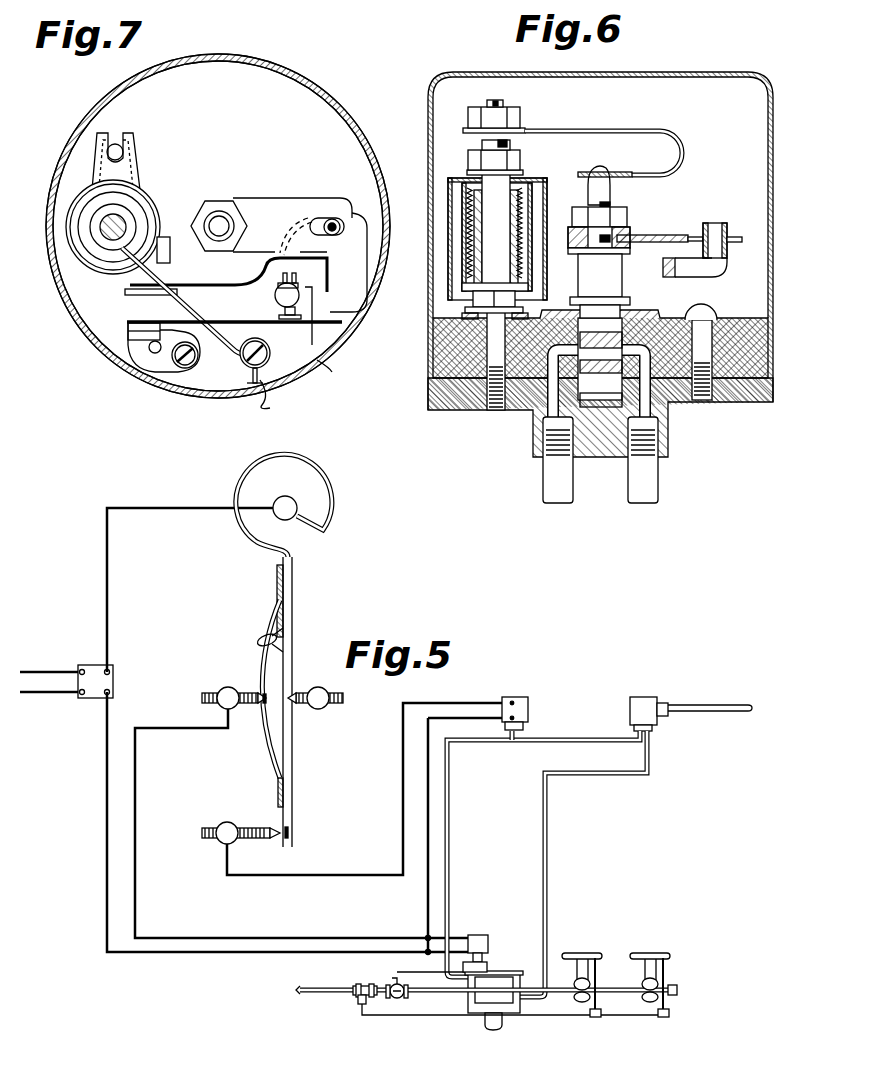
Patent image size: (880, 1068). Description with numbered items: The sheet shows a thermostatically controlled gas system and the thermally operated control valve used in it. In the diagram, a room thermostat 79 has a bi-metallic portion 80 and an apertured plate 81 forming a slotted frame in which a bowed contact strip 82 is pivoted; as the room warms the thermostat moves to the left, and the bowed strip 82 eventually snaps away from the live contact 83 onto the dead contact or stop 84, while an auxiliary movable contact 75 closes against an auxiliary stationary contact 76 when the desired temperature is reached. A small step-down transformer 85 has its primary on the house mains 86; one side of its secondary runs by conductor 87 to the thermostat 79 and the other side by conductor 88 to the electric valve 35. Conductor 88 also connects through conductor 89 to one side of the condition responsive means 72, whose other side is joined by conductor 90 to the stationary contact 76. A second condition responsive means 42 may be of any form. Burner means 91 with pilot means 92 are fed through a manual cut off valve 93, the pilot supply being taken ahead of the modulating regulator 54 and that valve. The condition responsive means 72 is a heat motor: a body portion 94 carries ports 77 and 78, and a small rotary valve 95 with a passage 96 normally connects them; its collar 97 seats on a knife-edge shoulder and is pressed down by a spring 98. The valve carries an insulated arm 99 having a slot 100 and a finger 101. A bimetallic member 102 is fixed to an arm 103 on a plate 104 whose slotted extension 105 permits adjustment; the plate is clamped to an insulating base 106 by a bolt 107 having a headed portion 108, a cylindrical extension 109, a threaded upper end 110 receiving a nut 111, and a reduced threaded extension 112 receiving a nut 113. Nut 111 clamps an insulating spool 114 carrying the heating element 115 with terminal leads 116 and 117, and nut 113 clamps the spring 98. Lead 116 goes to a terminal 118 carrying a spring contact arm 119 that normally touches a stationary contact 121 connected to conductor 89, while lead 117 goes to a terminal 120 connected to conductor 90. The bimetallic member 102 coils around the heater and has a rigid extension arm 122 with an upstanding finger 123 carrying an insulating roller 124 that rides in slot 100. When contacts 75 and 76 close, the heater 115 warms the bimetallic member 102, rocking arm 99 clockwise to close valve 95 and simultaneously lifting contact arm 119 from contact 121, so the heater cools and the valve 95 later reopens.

In FIG. 5, the electric valve 35 is at (505, 925).
In FIG. 5, the condition responsive means 42 is at (641, 695).
In FIG. 5, the pressure regulator 54 is at (496, 985).
In FIG. 7, the condition responsive means 72 is at (293, 66).
In FIG. 6, the condition responsive means 72 is at (713, 68).
In FIG. 5, the condition responsive means 72 is at (529, 701).
In FIG. 5, the auxiliary movable contact 75 is at (283, 838).
In FIG. 5, the auxiliary stationary contact 76 is at (255, 825).
In FIG. 6, the port 77 is at (647, 408).
In FIG. 6, the port 78 is at (557, 403).
In FIG. 5, the thermostat 79 is at (300, 567).
In FIG. 5, the bi-metallic portion 80 is at (336, 512).
In FIG. 5, the apertured plate or extension 81 is at (278, 790).
In FIG. 5, the bowed contact strip 82 is at (264, 736).
In FIG. 5, the live contact 83 is at (248, 684).
In FIG. 5, the dead contact or stop 84 is at (300, 705).
In FIG. 5, the step-down transformer 85 is at (90, 700).
In FIG. 5, the house mains 86 is at (41, 670).
In FIG. 5, the conductor 87 is at (107, 600).
In FIG. 5, the conductor 88 is at (107, 880).
In FIG. 7, the conductor 89 is at (334, 376).
In FIG. 5, the conductor 89 is at (427, 898).
In FIG. 7, the conductor 90 is at (274, 402).
In FIG. 5, the conductor 90 is at (286, 876).
In FIG. 5, the burner means 91 is at (580, 953).
In FIG. 5, the pilot means 92 is at (598, 965).
In FIG. 5, the manual cut off valve 93 is at (400, 1000).
In FIG. 6, the body portion 94 is at (733, 403).
In FIG. 6, the rotary valve 95 is at (610, 383).
In FIG. 6, the passage 96 is at (600, 350).
In FIG. 6, the collar 97 is at (617, 296).
In FIG. 6, the spring 98 is at (687, 153).
In FIG. 7, the arm 99 is at (272, 200).
In FIG. 6, the arm 99 is at (660, 232).
In FIG. 7, the slot 100 is at (348, 203).
In FIG. 7, the extension or finger 101 is at (338, 313).
In FIG. 7, the bimetallic member 102 is at (147, 192).
In FIG. 6, the bimetallic member 102 is at (447, 238).
In FIG. 7, the arm 103 is at (174, 222).
In FIG. 6, the plate 104 is at (460, 311).
In FIG. 7, the slotted extension 105 is at (137, 147).
In FIG. 6, the insulating base 106 is at (443, 343).
In FIG. 6, the bolt 107 is at (500, 411).
In FIG. 6, the headed portion 108 is at (515, 300).
In FIG. 6, the cylindrical extension 109 is at (500, 223).
In FIG. 6, the threaded upper end 110 is at (512, 145).
In FIG. 6, the nut 111 is at (467, 160).
In FIG. 6, the reduced threaded extension 112 is at (502, 103).
In FIG. 6, the nut 113 is at (522, 119).
In FIG. 6, the insulating spool 114 is at (463, 287).
In FIG. 6, the heating element 115 is at (466, 208).
In FIG. 7, the terminal lead 116 is at (147, 307).
In FIG. 7, the terminal lead 117 is at (190, 305).
In FIG. 7, the terminal 118 is at (163, 362).
In FIG. 7, the spring contact arm 119 is at (272, 325).
In FIG. 7, the terminal 120 is at (243, 360).
In FIG. 7, the stationary contact 121 is at (292, 293).
In FIG. 7, the rigid extension arm 122 is at (240, 280).
In FIG. 7, the upstanding finger 123 is at (327, 217).
In FIG. 6, the upstanding finger 123 is at (715, 222).
In FIG. 7, the insulating roller 124 is at (342, 227).
In FIG. 6, the insulating roller 124 is at (728, 227).